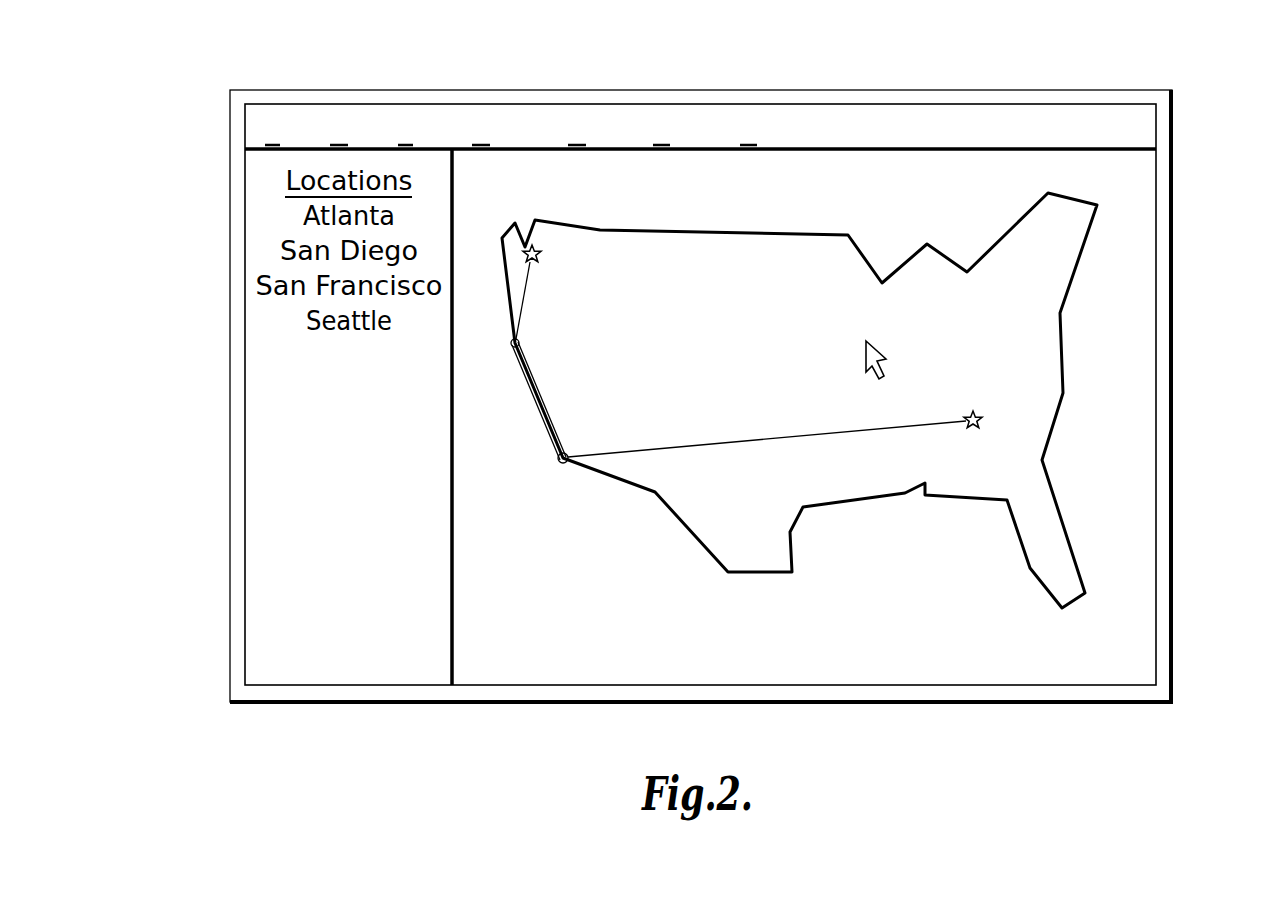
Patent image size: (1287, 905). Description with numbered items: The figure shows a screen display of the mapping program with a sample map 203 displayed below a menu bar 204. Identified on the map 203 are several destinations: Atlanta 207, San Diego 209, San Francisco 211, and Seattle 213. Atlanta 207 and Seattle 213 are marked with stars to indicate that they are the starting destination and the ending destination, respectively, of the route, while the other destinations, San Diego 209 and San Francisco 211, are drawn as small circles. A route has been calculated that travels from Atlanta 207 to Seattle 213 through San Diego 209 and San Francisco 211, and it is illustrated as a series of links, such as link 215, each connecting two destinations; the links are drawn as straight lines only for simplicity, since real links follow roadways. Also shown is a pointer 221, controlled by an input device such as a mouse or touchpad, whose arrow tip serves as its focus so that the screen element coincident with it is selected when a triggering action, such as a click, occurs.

The map 203 is at (1145, 377).
The menu bar 204 is at (1145, 127).
The Atlanta 207 is at (981, 416).
The San Diego 209 is at (559, 463).
The San Francisco 211 is at (511, 346).
The Seattle 213 is at (535, 247).
The link 215 is at (722, 443).
The pointer 221 is at (886, 358).